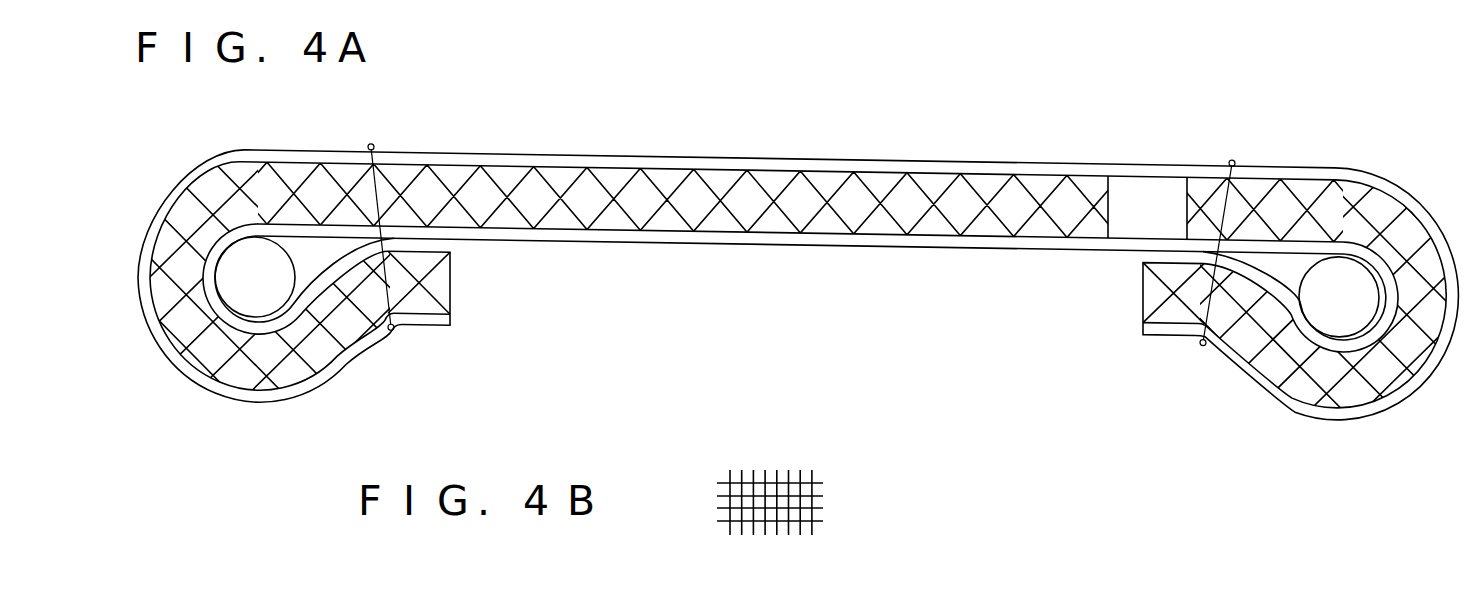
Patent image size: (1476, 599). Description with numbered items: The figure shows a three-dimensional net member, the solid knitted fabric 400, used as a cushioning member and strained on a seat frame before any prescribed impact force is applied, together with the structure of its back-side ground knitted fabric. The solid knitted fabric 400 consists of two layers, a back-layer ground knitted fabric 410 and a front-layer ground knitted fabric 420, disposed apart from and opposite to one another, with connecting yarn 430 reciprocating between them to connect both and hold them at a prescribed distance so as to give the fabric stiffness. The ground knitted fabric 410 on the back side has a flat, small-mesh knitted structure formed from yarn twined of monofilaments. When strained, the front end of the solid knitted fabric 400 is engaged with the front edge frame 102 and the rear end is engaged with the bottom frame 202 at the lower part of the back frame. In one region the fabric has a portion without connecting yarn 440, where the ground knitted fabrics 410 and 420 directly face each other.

In FIG. 4A, the solid knitted fabric 400 is at (903, 134).
In FIG. 4A, the ground knitted fabric 410 is at (997, 237).
In FIG. 4B, the ground knitted fabric 410 is at (817, 495).
In FIG. 4A, the ground knitted fabric 420 is at (1047, 152).
In FIG. 4A, the connecting yarn 430 is at (890, 203).
In FIG. 4A, the portion without connecting yarn 440 is at (1150, 183).
In FIG. 4A, the front edge frame 102 is at (231, 298).
In FIG. 4A, the bottom frame 202 is at (1347, 255).